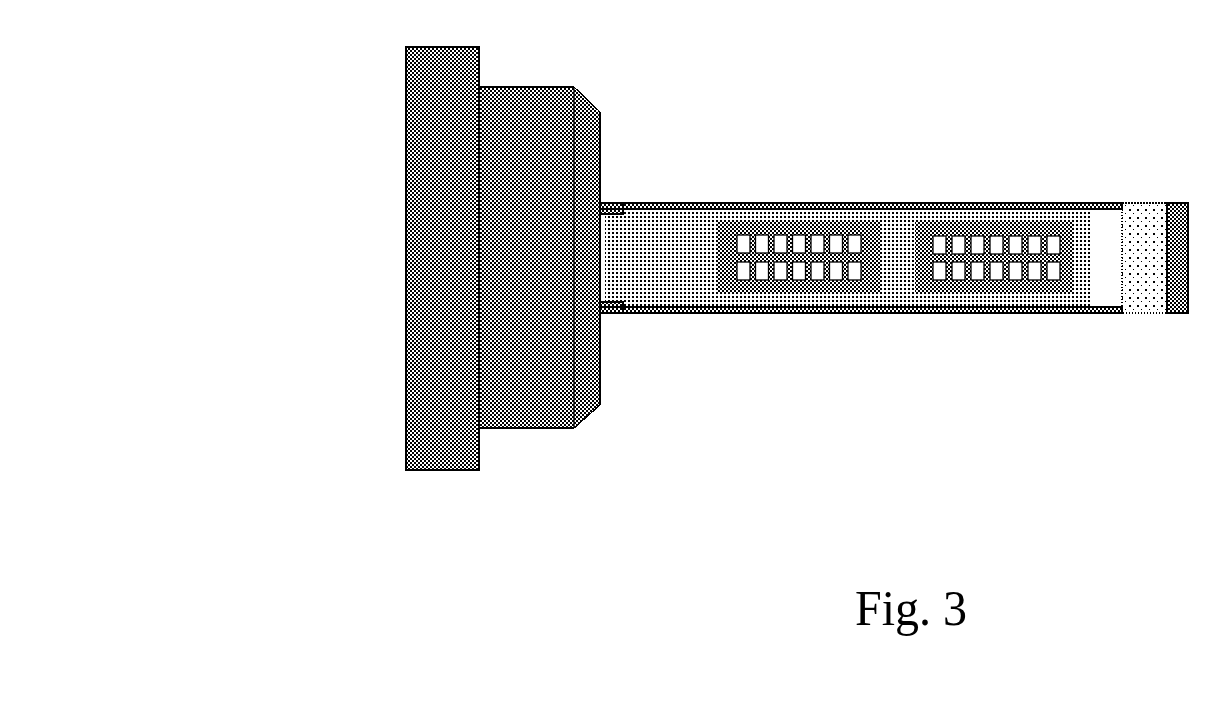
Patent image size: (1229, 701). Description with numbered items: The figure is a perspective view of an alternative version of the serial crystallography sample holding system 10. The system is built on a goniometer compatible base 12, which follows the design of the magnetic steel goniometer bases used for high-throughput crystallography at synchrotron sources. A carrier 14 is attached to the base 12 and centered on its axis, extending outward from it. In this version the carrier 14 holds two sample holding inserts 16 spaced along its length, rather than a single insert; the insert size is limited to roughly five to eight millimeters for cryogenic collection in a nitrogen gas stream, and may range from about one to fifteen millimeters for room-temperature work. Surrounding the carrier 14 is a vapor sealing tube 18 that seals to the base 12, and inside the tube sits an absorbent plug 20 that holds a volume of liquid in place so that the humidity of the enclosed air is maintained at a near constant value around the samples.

The serial crystallography sample holding system 10 is at (348, 93).
The goniometer compatible base 12 is at (515, 84).
The carrier 14 is at (652, 236).
The sample holding insert 16 is at (865, 237).
The vapor sealing tube 18 is at (1101, 232).
The absorbent plug 20 is at (1155, 293).